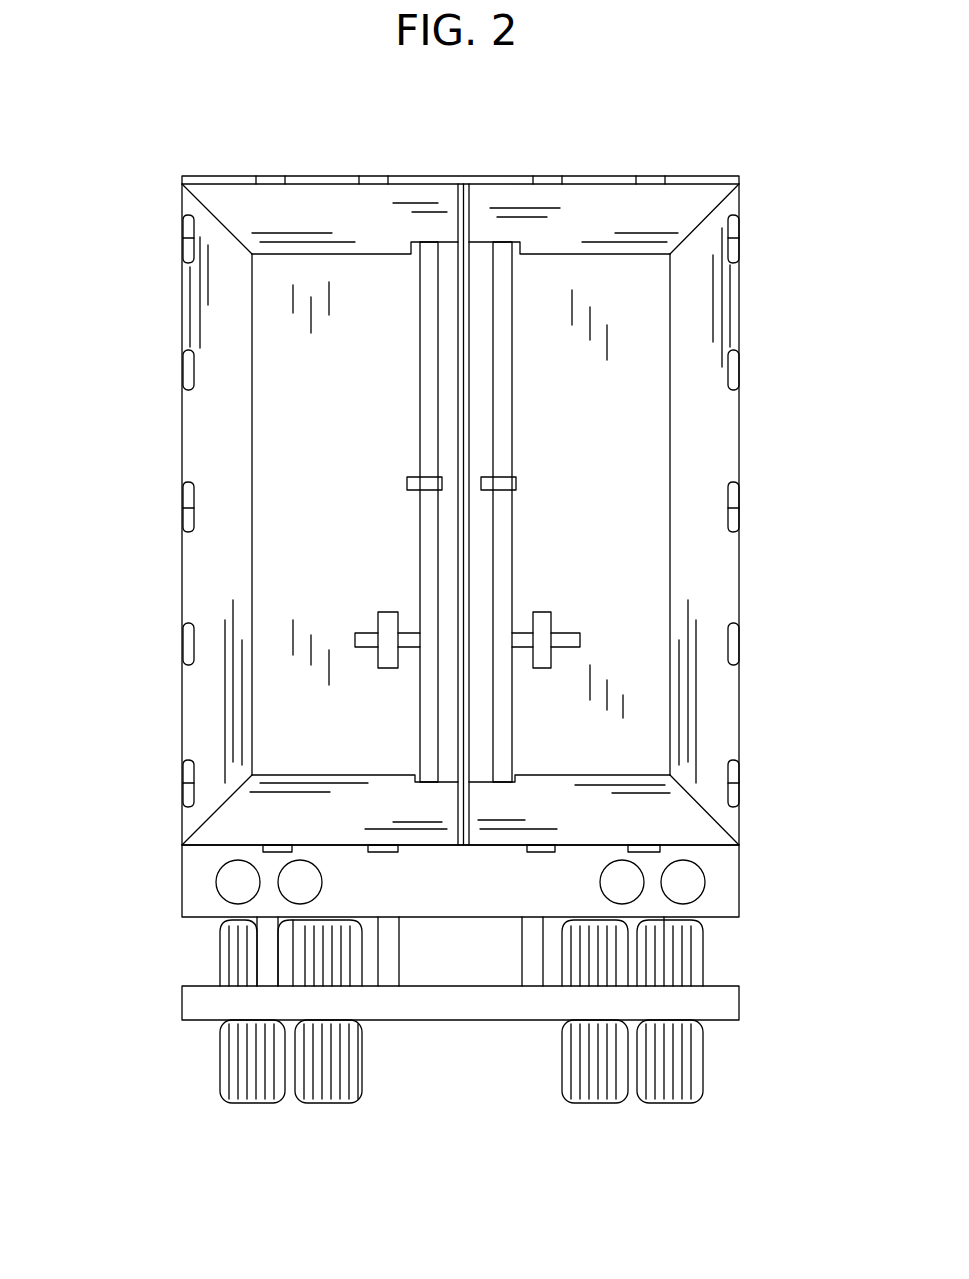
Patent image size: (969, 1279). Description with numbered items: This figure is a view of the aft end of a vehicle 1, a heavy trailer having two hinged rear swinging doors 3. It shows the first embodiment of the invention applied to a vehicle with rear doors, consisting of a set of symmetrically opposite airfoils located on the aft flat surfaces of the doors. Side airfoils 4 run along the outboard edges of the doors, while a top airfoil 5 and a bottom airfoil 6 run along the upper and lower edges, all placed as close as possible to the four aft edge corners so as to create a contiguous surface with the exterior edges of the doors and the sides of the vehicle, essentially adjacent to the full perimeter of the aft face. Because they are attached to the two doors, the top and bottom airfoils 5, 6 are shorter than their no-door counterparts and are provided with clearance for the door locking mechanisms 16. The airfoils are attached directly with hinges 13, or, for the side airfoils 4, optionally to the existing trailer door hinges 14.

The vehicle 1 is at (680, 167).
The rear swinging doors 3 is at (362, 433).
The side airfoils 4 is at (208, 552).
The top airfoil 5 is at (328, 210).
The bottom airfoil 6 is at (300, 822).
The hinges 13 is at (268, 180).
The trailer door hinges 14 is at (187, 255).
The door locking mechanisms 16 is at (427, 582).